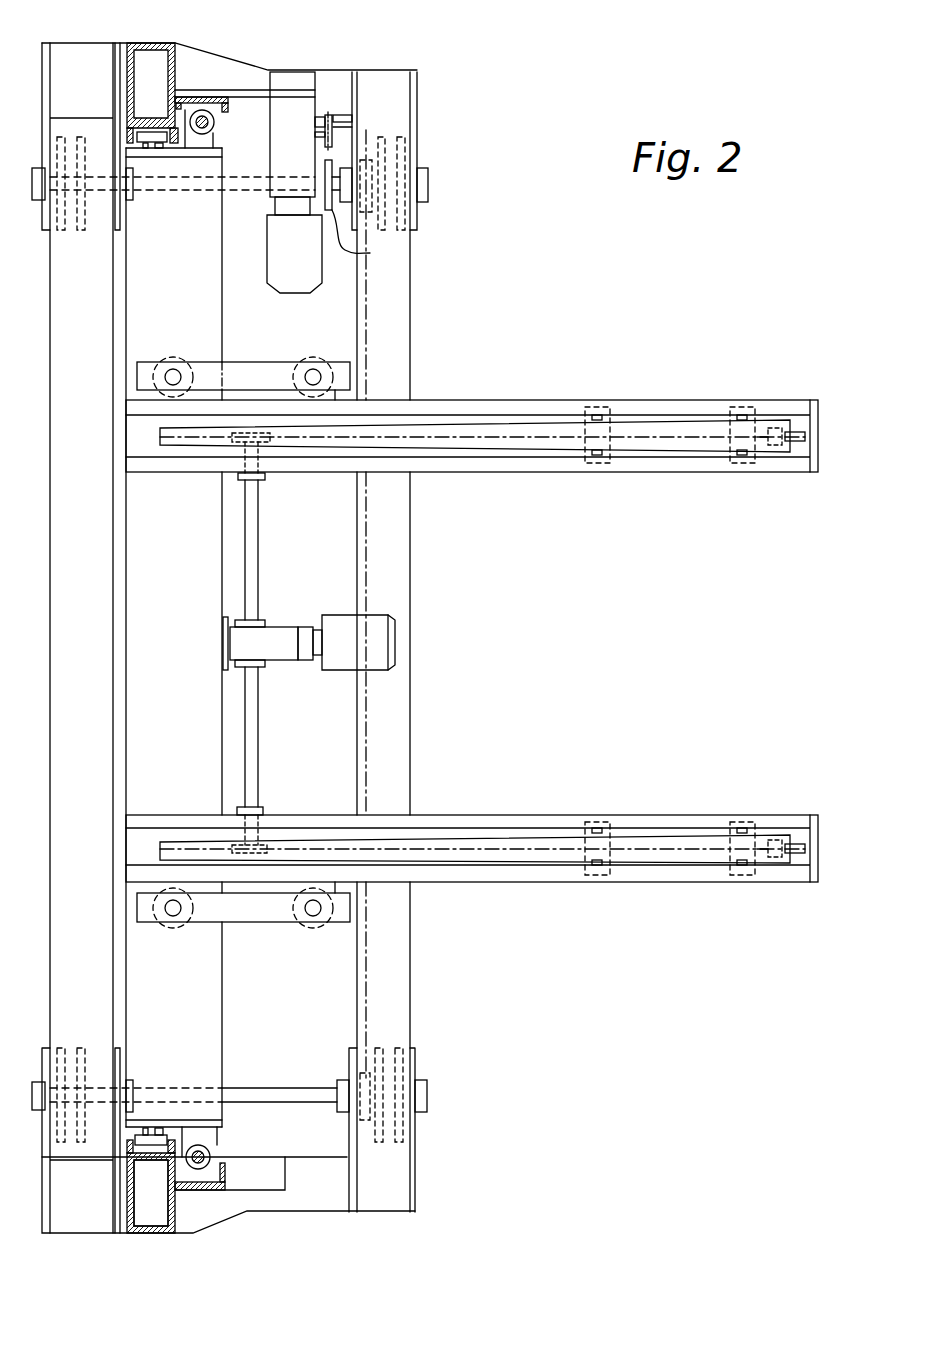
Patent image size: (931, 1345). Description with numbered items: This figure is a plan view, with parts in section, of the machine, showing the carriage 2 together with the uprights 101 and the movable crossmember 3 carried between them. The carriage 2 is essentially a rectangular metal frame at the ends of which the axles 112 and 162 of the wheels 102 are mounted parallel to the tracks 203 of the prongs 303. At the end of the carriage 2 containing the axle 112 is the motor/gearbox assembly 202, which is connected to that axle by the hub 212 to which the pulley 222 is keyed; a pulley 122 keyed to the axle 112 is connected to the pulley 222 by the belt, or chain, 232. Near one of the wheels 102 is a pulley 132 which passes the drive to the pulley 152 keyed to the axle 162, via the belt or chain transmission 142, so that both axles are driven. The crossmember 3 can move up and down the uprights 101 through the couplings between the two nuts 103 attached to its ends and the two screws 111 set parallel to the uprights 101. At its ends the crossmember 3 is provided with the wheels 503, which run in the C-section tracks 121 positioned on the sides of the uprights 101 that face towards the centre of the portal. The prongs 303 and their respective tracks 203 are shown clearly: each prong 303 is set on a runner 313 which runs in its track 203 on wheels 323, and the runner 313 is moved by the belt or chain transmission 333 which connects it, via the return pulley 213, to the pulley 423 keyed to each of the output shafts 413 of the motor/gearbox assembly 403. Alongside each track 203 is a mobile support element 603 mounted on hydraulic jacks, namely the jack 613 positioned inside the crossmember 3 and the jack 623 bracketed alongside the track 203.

The carriage 2 is at (270, 70).
The crossmember 3 is at (135, 740).
The longitudinal upright 101 is at (155, 43).
The wheel 102 is at (72, 222).
The nut 103 is at (200, 110).
The screw 111 is at (212, 126).
The axle 112 is at (167, 192).
The C-section track 121 is at (153, 1165).
The pulley 122 is at (370, 253).
The pulley 132 is at (372, 173).
The belt or chain transmission 142 is at (363, 556).
The pulley 152 is at (367, 1118).
The axle 162 is at (307, 1078).
The motor/gearbox assembly 202 is at (300, 292).
The track 203 is at (483, 463).
The hub 212 is at (322, 117).
The return pulley 213 is at (805, 430).
The pulley 222 is at (340, 117).
The belt or chain 232 is at (332, 155).
The prong 303 is at (530, 445).
The runner 313 is at (740, 452).
The wheel 323 is at (612, 388).
The belt or chain transmission 333 is at (438, 437).
The motor/gearbox assembly 403 is at (353, 660).
The output shaft 413 is at (258, 527).
The pulley 423 is at (233, 446).
The wheel 503 is at (150, 132).
The mobile support element 603 is at (348, 377).
The jack 613 is at (171, 356).
The jack 623 is at (318, 356).